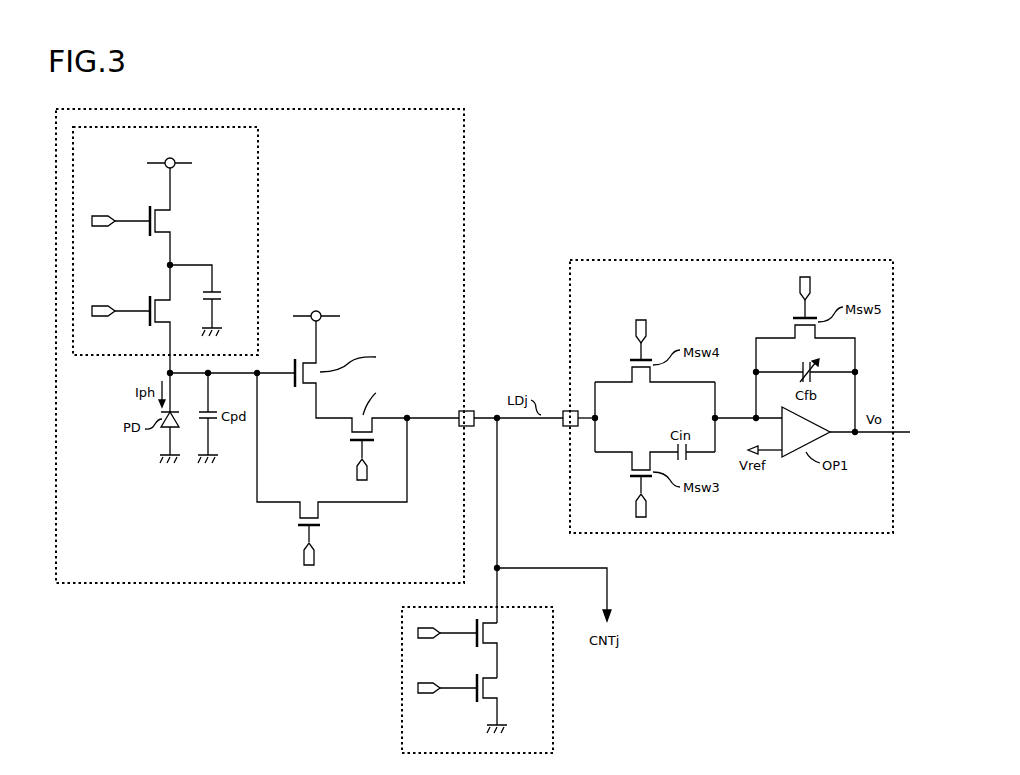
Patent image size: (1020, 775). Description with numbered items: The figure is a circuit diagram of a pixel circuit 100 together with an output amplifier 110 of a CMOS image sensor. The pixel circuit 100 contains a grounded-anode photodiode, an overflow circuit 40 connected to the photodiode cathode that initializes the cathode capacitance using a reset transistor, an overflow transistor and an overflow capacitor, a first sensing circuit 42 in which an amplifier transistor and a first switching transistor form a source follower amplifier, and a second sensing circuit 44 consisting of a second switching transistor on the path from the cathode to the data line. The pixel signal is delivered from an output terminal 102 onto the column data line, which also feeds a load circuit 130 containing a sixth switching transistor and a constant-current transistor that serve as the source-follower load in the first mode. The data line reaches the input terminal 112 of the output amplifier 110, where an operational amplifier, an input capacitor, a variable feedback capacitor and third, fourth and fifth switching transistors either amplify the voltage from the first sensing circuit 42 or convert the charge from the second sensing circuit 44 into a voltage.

The overflow circuit 40 is at (258, 208).
The first sensing circuit 42 is at (413, 343).
The second sensing circuit 44 is at (308, 500).
The pixel circuit 100 is at (242, 583).
The output terminal 102 is at (470, 410).
The output amplifier 110 is at (735, 533).
The input terminal 112 is at (566, 426).
The load circuit 130 is at (553, 696).